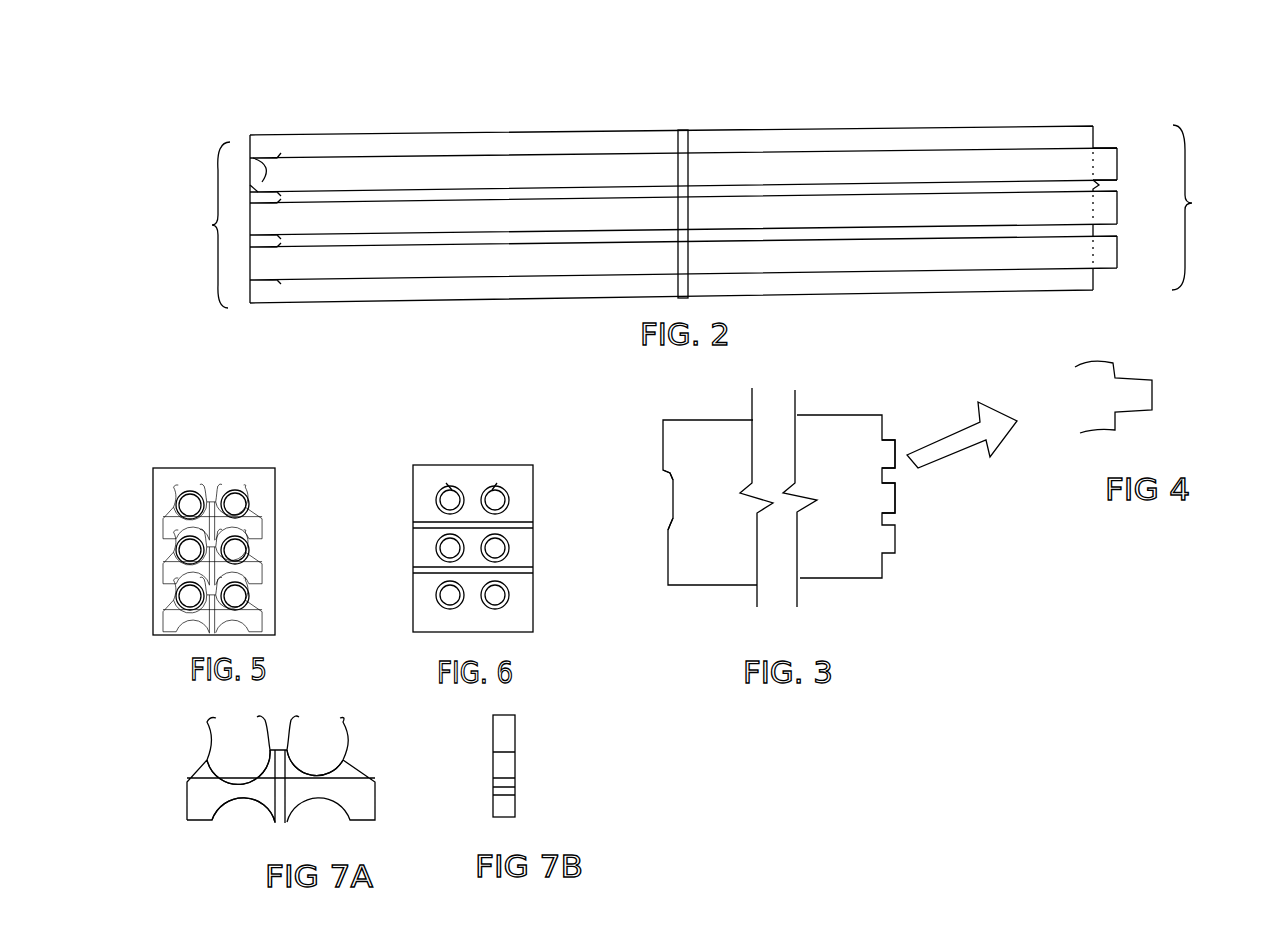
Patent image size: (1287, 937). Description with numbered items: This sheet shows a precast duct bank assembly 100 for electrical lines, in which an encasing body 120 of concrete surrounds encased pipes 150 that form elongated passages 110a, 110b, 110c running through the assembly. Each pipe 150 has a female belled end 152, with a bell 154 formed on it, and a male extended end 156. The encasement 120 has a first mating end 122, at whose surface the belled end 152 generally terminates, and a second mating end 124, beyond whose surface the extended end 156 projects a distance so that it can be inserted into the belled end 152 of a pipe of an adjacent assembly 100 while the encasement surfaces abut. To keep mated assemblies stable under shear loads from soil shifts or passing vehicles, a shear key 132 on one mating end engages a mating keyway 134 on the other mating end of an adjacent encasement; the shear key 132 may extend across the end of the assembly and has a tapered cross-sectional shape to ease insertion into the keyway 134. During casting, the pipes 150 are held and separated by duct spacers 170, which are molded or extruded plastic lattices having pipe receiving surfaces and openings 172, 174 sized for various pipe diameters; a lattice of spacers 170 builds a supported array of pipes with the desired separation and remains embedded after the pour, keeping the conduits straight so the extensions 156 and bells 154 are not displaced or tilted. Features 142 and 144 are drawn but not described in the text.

In FIG. 2, the duct bank assembly 100 is at (886, 86).
In FIG. 2, the elongated passage 110a is at (400, 188).
In FIG. 2, the elongated passage 110b is at (400, 229).
In FIG. 2, the elongated passage 110c is at (400, 272).
In FIG. 3, the encasing body 120 is at (728, 572).
In FIG. 5, the encasing body 120 is at (265, 488).
In FIG. 6, the encasing body 120 is at (518, 500).
In FIG. 2, the first mating end 122 is at (186, 225).
In FIG. 2, the second mating end 124 is at (1213, 207).
In FIG. 3, the shear key 132 is at (900, 467).
In FIG. 4, the shear key 132 is at (1152, 392).
In FIG. 6, the shear key 132 is at (534, 524).
In FIG. 3, the keyway 134 is at (668, 520).
In FIG. 3, the groove 142 is at (685, 523).
In FIG. 3, the recess 144 is at (853, 520).
In FIG. 2, the pipe 150 is at (522, 153).
In FIG. 5, the pipe 150 is at (190, 468).
In FIG. 6, the pipe 150 is at (450, 597).
In FIG. 2, the belled end 152 is at (255, 180).
In FIG. 2, the bell 154 is at (250, 190).
In FIG. 6, the bell 154 is at (497, 483).
In FIG. 2, the extended end 156 is at (1105, 143).
In FIG. 3, the extended end 156 is at (885, 440).
In FIG. 2, the duct spacer 170 is at (683, 128).
In FIG. 5, the duct spacer 170 is at (230, 482).
In FIG. 7A, the duct spacer 170 is at (165, 755).
In FIG. 7B, the duct spacer 170 is at (517, 733).
In FIG. 7A, the pipe receiving surface 172 is at (253, 763).
In FIG. 7A, the pipe receiving opening 174 is at (327, 810).